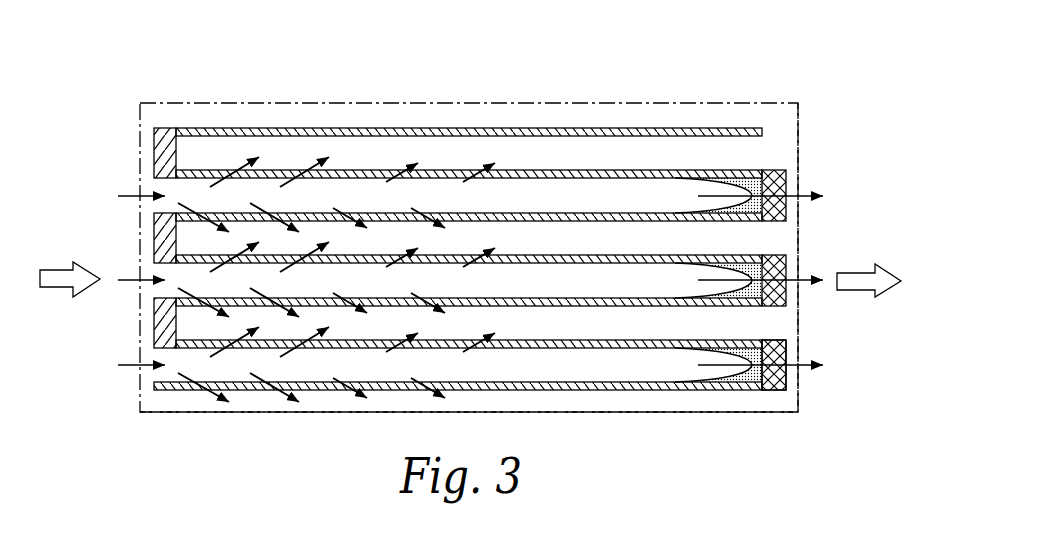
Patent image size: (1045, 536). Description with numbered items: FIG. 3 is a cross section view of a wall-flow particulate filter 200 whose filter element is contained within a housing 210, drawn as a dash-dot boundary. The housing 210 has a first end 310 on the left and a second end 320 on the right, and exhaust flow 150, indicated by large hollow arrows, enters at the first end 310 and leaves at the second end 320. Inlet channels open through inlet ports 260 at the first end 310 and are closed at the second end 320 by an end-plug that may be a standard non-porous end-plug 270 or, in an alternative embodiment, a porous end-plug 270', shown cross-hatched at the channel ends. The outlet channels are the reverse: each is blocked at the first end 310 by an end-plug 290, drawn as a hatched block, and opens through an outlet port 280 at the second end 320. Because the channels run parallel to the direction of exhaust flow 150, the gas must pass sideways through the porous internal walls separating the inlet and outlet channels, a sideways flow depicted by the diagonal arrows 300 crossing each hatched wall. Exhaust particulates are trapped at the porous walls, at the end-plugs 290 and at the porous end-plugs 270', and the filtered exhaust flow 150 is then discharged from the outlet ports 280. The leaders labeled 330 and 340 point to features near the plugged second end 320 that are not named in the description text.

The exhaust flow 150 is at (53, 268).
The particulate filter 200 is at (470, 242).
The housing 210 is at (593, 103).
The inlet port 260 is at (140, 372).
The non-porous end-plug 270 is at (821, 322).
The porous end-plug 270' is at (821, 407).
The outlet port 280 is at (773, 153).
The end-plug 290 is at (168, 135).
The sideways flow arrows 300 is at (278, 390).
The first end 310 is at (138, 155).
The second end 320 is at (803, 400).
The potting material 330 is at (746, 384).
The outlet end 340 is at (792, 199).